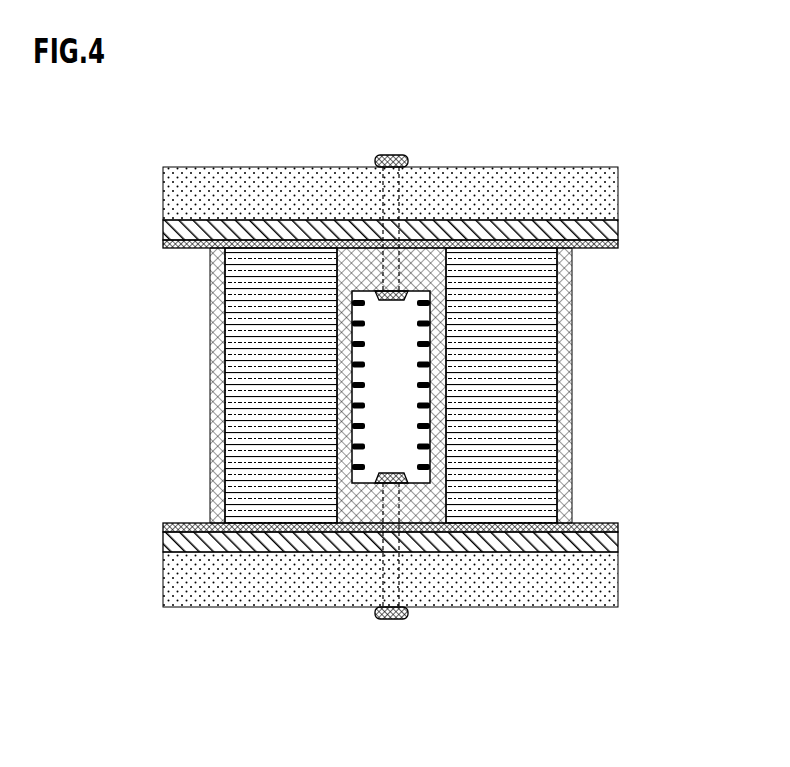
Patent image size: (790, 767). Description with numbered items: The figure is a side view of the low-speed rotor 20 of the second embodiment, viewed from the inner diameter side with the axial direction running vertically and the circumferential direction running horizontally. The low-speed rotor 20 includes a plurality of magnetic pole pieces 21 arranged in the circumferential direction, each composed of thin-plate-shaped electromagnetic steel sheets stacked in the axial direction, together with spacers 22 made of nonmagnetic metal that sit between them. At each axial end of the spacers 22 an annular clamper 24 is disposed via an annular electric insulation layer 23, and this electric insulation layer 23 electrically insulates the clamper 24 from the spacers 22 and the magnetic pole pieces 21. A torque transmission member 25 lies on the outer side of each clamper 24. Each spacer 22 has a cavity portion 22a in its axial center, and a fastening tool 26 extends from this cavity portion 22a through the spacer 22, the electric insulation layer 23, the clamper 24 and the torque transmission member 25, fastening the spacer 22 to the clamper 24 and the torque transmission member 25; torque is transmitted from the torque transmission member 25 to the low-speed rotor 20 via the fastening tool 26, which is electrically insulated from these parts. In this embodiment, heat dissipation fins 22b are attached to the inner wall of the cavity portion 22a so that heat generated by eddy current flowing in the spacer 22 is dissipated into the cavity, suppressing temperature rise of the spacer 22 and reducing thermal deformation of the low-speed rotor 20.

The low-speed rotor 20 is at (143, 152).
The magnetic pole piece 21 is at (530, 290).
The spacer 22 is at (445, 410).
The cavity portion 22a is at (430, 462).
The heat dissipation fin 22b is at (352, 378).
The electric insulation layer 23 is at (618, 244).
The clamper 24 is at (588, 224).
The torque transmission member 25 is at (510, 186).
The fastening tool 26 is at (408, 157).